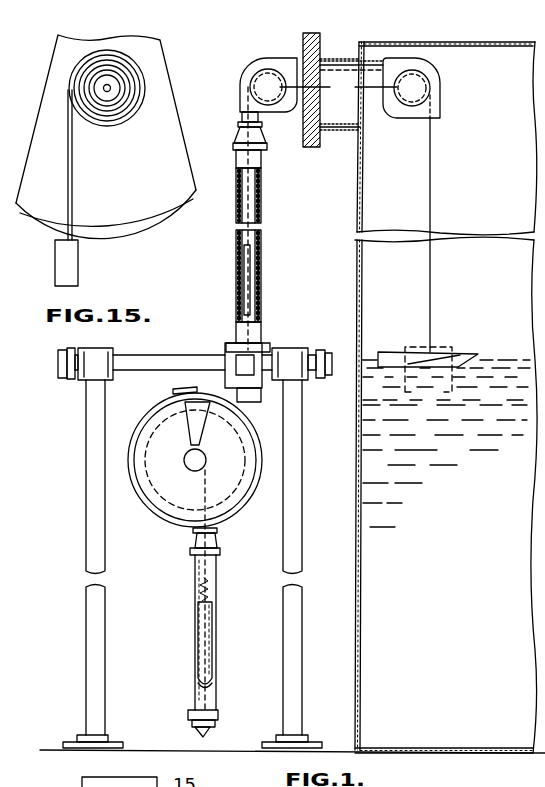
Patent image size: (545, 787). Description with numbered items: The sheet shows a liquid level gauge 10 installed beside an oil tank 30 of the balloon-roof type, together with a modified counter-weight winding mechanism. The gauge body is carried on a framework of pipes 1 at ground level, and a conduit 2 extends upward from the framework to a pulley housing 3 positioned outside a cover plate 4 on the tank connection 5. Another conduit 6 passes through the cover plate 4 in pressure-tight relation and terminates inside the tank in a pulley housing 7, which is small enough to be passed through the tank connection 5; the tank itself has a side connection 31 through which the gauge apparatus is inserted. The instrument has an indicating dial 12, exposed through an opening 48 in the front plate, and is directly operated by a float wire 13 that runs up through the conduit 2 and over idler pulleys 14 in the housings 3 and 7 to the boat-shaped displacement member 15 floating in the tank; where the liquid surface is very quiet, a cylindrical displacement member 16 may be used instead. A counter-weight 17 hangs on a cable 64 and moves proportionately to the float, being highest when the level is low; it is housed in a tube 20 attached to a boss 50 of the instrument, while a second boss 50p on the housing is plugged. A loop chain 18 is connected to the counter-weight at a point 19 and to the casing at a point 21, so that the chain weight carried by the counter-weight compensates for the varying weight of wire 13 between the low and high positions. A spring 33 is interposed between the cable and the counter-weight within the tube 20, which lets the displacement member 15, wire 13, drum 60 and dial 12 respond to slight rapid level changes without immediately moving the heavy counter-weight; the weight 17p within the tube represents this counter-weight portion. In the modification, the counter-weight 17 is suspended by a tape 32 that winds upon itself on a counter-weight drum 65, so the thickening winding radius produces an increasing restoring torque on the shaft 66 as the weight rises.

In FIG. 1, the framework of pipes 1 is at (86, 411).
In FIG. 1, the conduit 2 is at (238, 268).
In FIG. 1, the pulley housing 3 is at (240, 87).
In FIG. 1, the cover plate 4 is at (304, 135).
In FIG. 1, the tank connection 5 is at (344, 60).
In FIG. 1, the conduit 6 is at (334, 62).
In FIG. 1, the pulley housing 7 is at (442, 90).
In FIG. 1, the liquid level gauge 10 is at (165, 490).
In FIG. 15, the indicating dial 12 is at (121, 238).
In FIG. 1, the indicating dial 12 is at (199, 402).
In FIG. 1, the float wire 13 is at (432, 275).
In FIG. 1, the idler pulleys 14 is at (338, 93).
In FIG. 1, the displacement member 15 is at (394, 352).
In FIG. 1, the cylindrical displacement member 16 is at (447, 348).
In FIG. 15, the counter-weight 17 is at (55, 267).
In FIG. 1, the counter-weight 17 is at (214, 630).
In FIG. 1, the weight 17p is at (250, 270).
In FIG. 1, the loop chain 18 is at (198, 690).
In FIG. 1, the chain connection point 19 is at (209, 683).
In FIG. 1, the tube 20 is at (217, 566).
In FIG. 1, the casing connection point 21 is at (195, 558).
In FIG. 1, the oil tank 30 is at (386, 463).
In FIG. 1, the side connection 31 is at (336, 130).
In FIG. 15, the tape 32 is at (75, 187).
In FIG. 1, the spring 33 is at (217, 590).
In FIG. 1, the opening 48 is at (190, 418).
In FIG. 1, the boss 50 is at (217, 528).
In FIG. 1, the second boss 50p is at (173, 390).
In FIG. 15, the drum 60 is at (172, 196).
In FIG. 1, the cable 64 is at (205, 493).
In FIG. 15, the counter-weight drum 65 is at (111, 96).
In FIG. 15, the shaft 66 is at (113, 86).